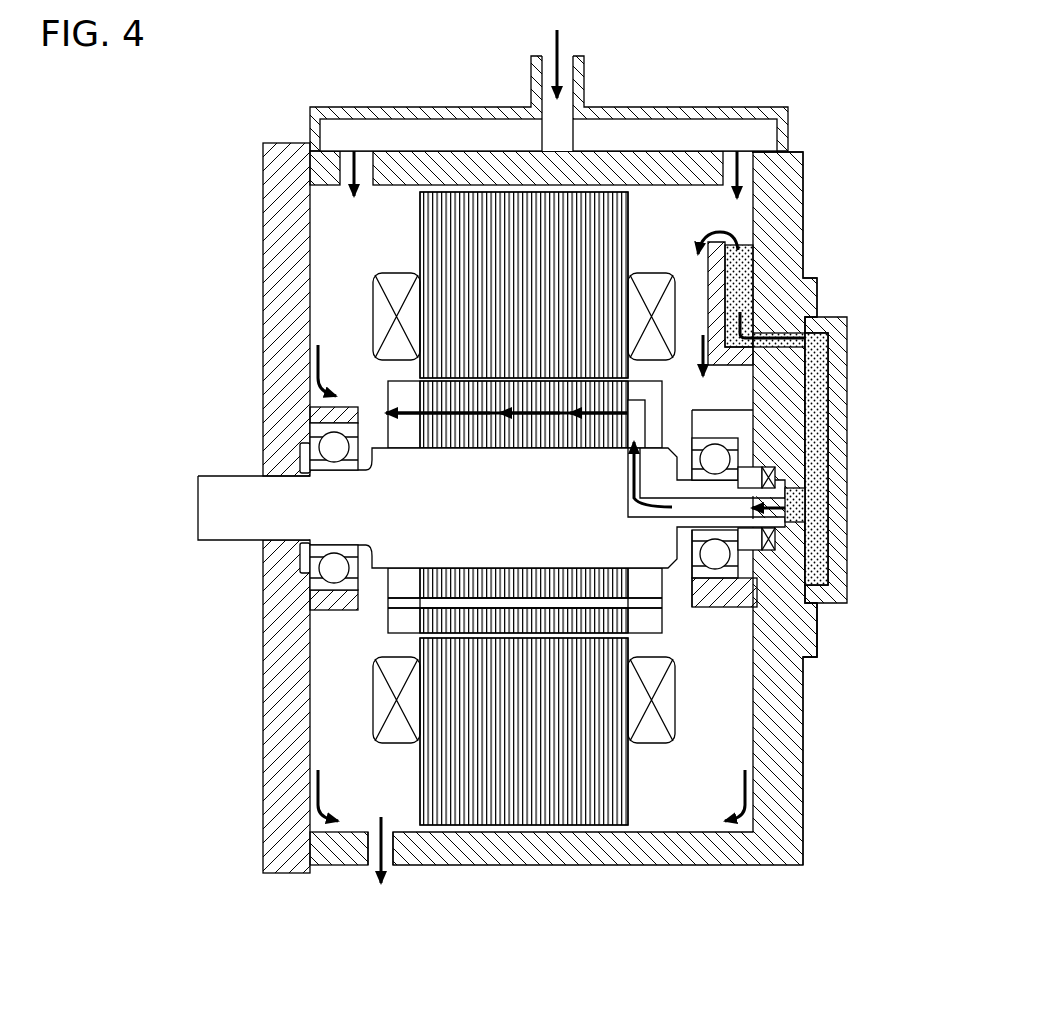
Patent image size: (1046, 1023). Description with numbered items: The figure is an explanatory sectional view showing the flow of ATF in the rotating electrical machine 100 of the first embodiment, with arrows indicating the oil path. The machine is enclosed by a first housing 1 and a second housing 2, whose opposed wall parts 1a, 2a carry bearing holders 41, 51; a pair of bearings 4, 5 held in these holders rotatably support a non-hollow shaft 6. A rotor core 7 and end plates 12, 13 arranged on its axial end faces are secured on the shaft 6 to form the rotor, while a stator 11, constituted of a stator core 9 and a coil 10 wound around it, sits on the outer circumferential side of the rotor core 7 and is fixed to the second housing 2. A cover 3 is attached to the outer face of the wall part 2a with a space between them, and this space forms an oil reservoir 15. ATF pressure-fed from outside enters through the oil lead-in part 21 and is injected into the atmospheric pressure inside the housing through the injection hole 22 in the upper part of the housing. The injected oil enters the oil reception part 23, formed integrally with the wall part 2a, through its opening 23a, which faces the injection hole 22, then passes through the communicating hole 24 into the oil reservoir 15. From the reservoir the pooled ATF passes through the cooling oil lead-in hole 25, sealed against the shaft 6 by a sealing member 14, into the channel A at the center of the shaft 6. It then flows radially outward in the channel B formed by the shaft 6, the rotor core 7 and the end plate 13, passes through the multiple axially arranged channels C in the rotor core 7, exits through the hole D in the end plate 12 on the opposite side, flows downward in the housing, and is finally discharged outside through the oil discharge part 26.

The rotating electrical machine 100 is at (860, 70).
The first housing 1 is at (263, 157).
The wall part 1a is at (263, 207).
The second housing 2 is at (405, 107).
The wall part 2a is at (803, 172).
The cover 3 is at (847, 372).
The bearing 4 is at (390, 425).
The bearing 5 is at (718, 562).
The shaft 6 is at (210, 476).
The rotor core 7 is at (445, 400).
The stator core 9 is at (612, 192).
The coil 10 is at (710, 245).
The stator 11 is at (632, 215).
The end plate 12 is at (400, 630).
The end plate 13 is at (700, 600).
The sealing member 14 is at (775, 542).
The oil reservoir 15 is at (828, 455).
The oil lead-in part 21 is at (566, 62).
The injection hole 22 is at (349, 151).
The oil reception part 23 is at (722, 300).
The opening 23a is at (735, 265).
The communicating hole 24 is at (830, 338).
The cooling oil lead-in hole 25 is at (805, 505).
The oil discharge part 26 is at (373, 862).
The bearing holder 41 is at (330, 410).
The bearing holder 51 is at (770, 475).
The channel A is at (803, 630).
The channel B is at (818, 402).
The channels C is at (467, 413).
The hole D is at (405, 600).